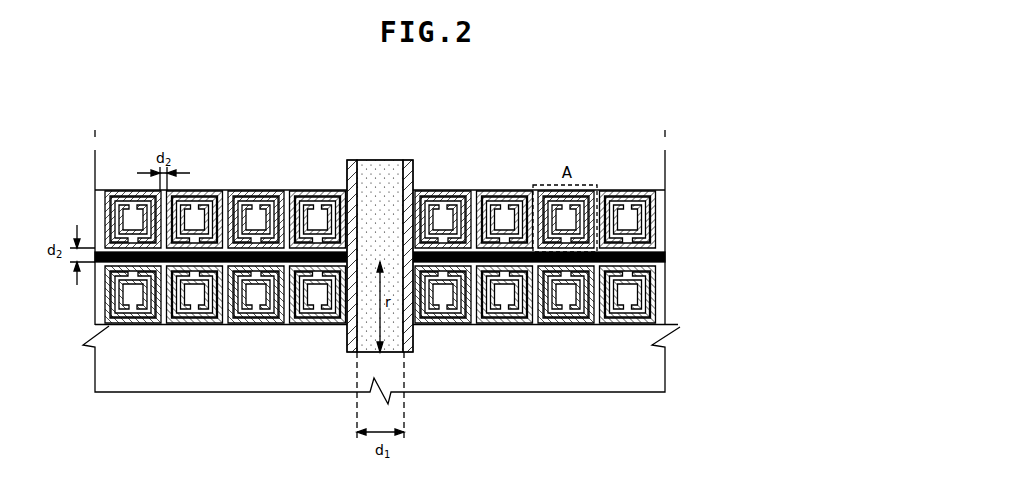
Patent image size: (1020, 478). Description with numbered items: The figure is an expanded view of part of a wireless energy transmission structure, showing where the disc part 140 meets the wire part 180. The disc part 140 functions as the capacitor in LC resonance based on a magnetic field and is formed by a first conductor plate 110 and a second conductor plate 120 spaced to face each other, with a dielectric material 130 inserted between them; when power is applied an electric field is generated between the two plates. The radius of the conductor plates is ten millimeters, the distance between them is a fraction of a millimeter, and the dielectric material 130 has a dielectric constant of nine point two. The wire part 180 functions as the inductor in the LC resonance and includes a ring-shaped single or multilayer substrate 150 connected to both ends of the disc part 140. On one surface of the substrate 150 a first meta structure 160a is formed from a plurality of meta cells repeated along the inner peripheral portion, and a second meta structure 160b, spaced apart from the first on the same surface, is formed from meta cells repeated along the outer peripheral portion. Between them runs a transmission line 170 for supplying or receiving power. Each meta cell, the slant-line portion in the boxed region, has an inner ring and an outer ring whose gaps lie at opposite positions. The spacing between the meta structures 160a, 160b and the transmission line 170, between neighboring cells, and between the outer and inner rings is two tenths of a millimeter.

The first conductor plate 110 is at (352, 160).
The second conductor plate 120 is at (421, 237).
The dielectric material 130 is at (381, 171).
The disc part 140 is at (384, 218).
The substrate 150 is at (661, 204).
The first meta structure 160a is at (663, 219).
The second meta structure 160b is at (434, 294).
The transmission line 170 is at (664, 257).
The wire part 180 is at (452, 267).